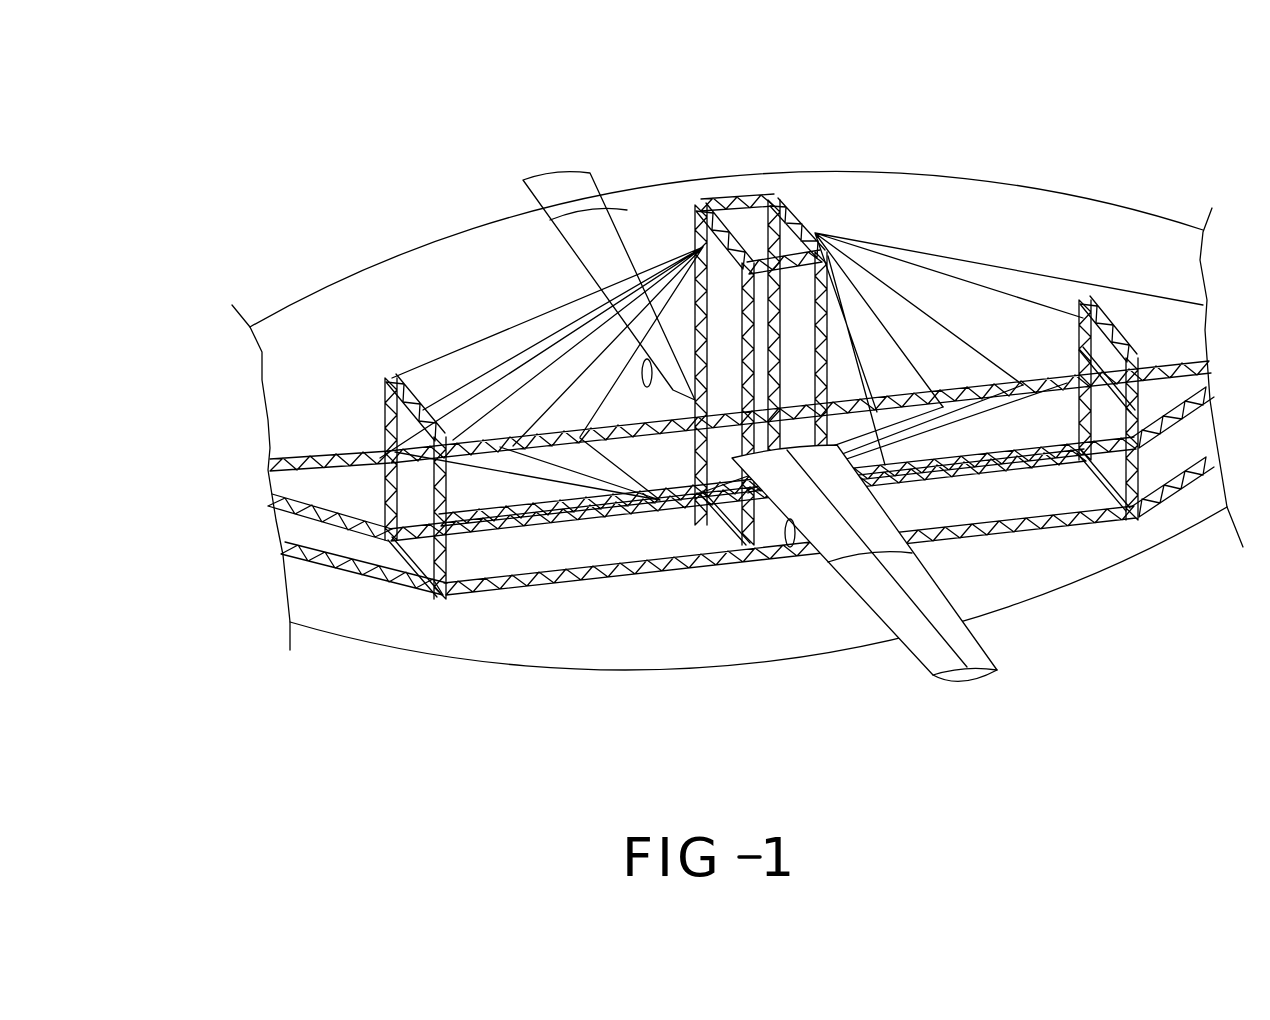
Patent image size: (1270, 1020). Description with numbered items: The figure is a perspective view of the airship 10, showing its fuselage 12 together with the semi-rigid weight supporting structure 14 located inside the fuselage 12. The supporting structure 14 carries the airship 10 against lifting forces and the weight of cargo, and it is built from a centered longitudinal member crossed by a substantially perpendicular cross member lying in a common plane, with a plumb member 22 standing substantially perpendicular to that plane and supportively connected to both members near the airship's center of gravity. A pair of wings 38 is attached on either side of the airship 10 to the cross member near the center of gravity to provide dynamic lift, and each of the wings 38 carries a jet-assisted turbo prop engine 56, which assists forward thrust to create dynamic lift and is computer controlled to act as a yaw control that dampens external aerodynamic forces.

The airship 10 is at (871, 158).
The fuselage 12 is at (1047, 190).
The semi-rigid weight supporting structure 14 is at (457, 597).
The plumb member 22 is at (700, 215).
The wings 38 is at (980, 648).
The jet-assisted turbo prop engine 56 is at (797, 545).